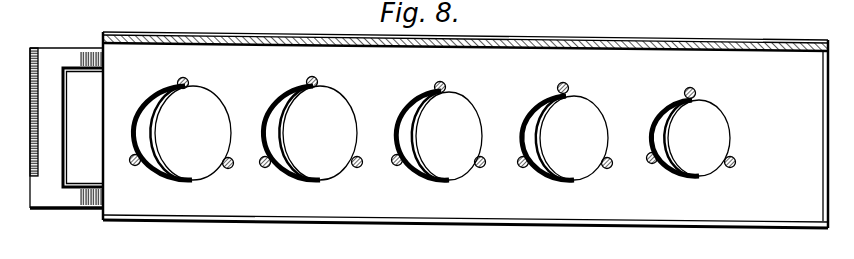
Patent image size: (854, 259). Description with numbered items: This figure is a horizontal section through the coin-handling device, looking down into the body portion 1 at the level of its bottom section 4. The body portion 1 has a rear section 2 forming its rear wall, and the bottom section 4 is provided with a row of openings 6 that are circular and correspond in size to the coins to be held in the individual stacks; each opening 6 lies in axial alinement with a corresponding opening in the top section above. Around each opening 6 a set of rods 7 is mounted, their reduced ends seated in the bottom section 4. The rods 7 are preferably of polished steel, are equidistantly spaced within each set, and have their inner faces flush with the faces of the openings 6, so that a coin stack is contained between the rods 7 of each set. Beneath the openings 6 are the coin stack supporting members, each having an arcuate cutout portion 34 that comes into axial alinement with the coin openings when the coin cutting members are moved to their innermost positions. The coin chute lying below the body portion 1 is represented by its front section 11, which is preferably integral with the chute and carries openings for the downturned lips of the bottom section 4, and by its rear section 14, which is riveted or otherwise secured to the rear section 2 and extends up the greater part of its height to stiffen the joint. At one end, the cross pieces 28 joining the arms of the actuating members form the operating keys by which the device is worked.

The body portion 1 is at (264, 49).
The rear section 2 is at (302, 47).
The bottom section 4 is at (266, 135).
The openings 6 is at (341, 168).
The rods 7 is at (192, 70).
The front section 11 is at (436, 227).
The rear section 14 is at (328, 33).
The cross pieces 28 is at (52, 77).
The cutout portion 34 is at (293, 160).